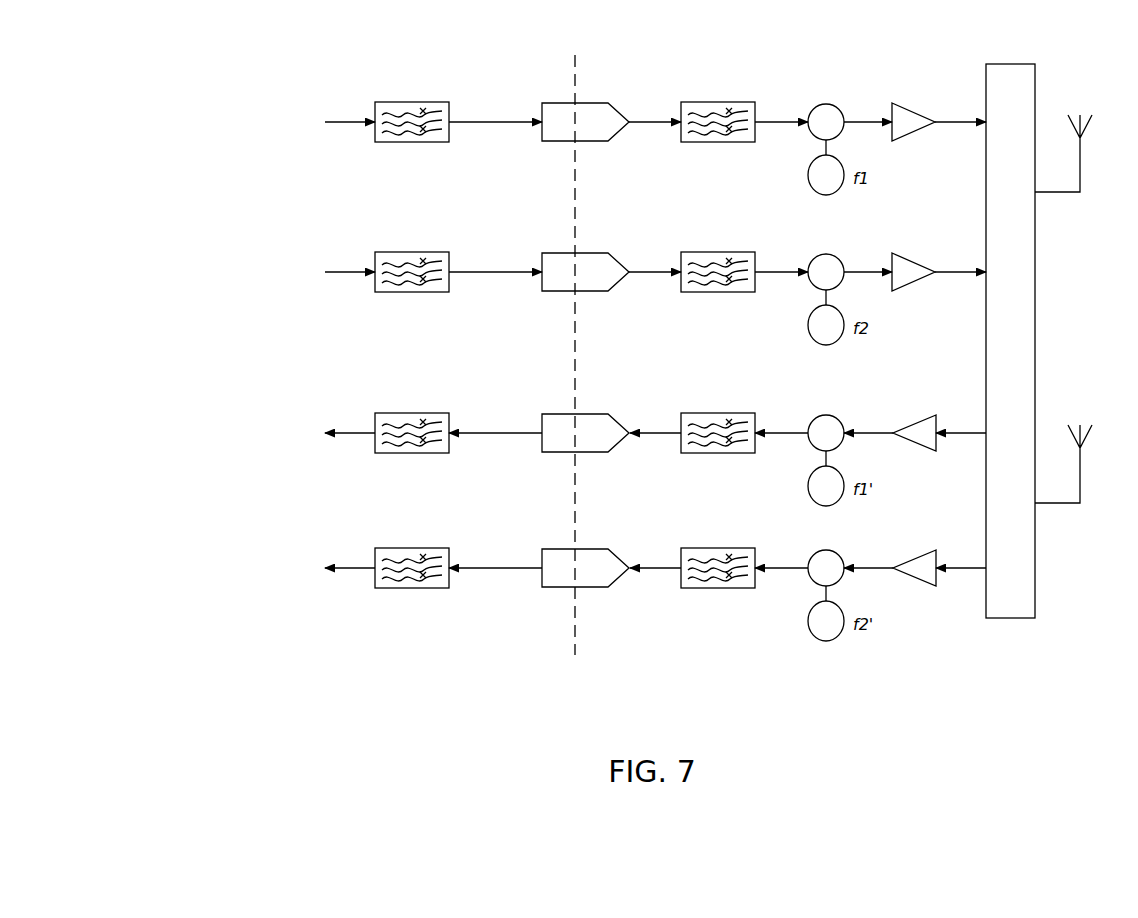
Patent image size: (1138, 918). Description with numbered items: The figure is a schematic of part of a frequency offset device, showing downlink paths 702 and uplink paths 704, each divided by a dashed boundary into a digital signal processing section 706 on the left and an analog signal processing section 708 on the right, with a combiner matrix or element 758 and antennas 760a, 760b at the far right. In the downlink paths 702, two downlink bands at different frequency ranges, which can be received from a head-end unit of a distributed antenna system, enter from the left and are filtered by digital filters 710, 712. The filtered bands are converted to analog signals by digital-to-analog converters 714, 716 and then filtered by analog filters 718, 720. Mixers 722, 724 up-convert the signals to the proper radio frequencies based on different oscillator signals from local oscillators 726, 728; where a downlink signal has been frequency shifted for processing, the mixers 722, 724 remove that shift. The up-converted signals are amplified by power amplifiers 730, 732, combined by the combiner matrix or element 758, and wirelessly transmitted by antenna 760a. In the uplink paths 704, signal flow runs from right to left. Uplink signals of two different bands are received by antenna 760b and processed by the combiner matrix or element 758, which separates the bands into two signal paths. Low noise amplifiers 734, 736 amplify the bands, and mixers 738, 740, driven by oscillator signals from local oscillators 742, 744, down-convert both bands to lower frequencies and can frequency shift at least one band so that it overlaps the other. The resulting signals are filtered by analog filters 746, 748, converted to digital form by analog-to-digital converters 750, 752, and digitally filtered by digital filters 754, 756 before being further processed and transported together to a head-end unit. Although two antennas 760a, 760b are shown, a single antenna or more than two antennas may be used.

The downlink paths 702 is at (230, 295).
The uplink paths 704 is at (230, 412).
The digital signal processing section 706 is at (474, 671).
The analog signal processing section 708 is at (687, 674).
The digital filter 710 is at (441, 101).
The digital filter 712 is at (441, 251).
The digital-to-analog converter 714 is at (601, 103).
The digital-to-analog converter 716 is at (601, 253).
The analog filter 718 is at (735, 102).
The analog filter 720 is at (735, 252).
The mixer 722 is at (838, 110).
The mixer 724 is at (838, 260).
The local oscillator 726 is at (809, 173).
The local oscillator 728 is at (809, 323).
The power amplifier 730 is at (910, 103).
The power amplifier 732 is at (910, 253).
The low noise amplifier 734 is at (922, 415).
The low noise amplifier 736 is at (922, 550).
The mixer 738 is at (838, 421).
The mixer 740 is at (838, 556).
The local oscillator 742 is at (809, 484).
The local oscillator 744 is at (809, 618).
The analog filter 746 is at (735, 413).
The analog filter 748 is at (735, 548).
The analog-to-digital converter 750 is at (601, 414).
The analog-to-digital converter 752 is at (601, 549).
The digital filter 754 is at (441, 412).
The digital filter 756 is at (441, 547).
The combiner matrix or element 758 is at (1010, 619).
The antenna 760a is at (1084, 128).
The antenna 760b is at (1084, 435).